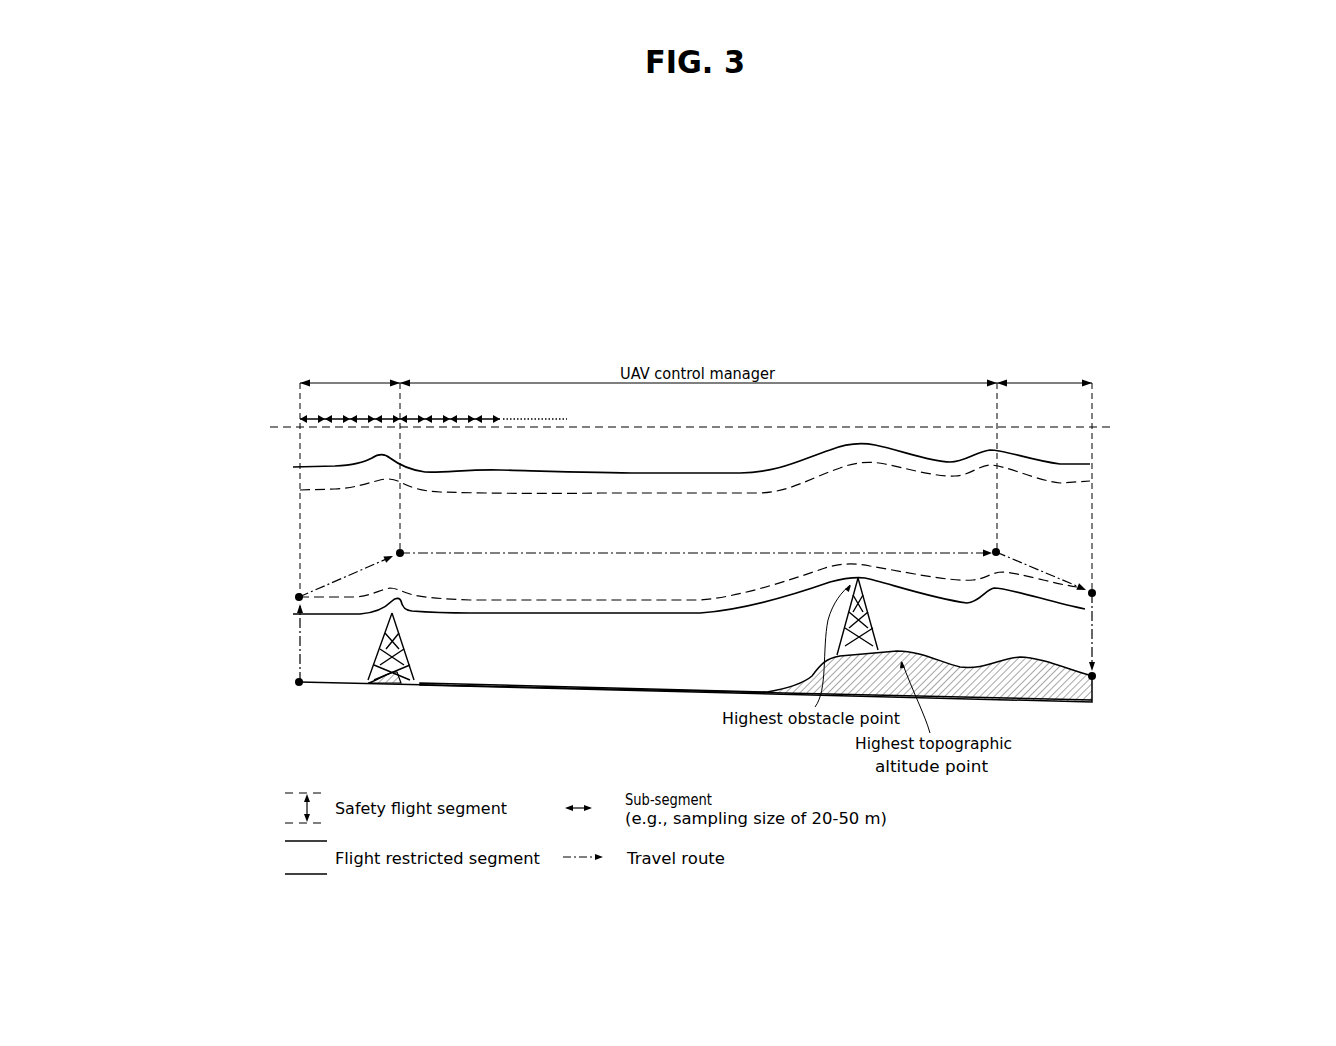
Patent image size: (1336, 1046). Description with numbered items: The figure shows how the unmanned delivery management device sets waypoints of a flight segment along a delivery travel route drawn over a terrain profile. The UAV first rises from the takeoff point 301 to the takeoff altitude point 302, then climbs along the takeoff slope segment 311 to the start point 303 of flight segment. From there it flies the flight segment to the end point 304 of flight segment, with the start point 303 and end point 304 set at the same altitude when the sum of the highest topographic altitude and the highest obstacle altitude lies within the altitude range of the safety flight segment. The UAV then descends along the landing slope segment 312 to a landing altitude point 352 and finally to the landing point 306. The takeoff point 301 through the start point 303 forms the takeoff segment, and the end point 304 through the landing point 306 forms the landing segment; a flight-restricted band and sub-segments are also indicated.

The takeoff point 301 is at (297, 695).
The takeoff altitude point 302 is at (292, 601).
The start point of flight segment 303 is at (387, 552).
The end point of flight segment 304 is at (1006, 549).
The landing point 306 is at (1104, 677).
The takeoff slope segment 311 is at (353, 471).
The landing slope segment 312 is at (1042, 469).
The Landing altitude point 352 is at (1104, 592).